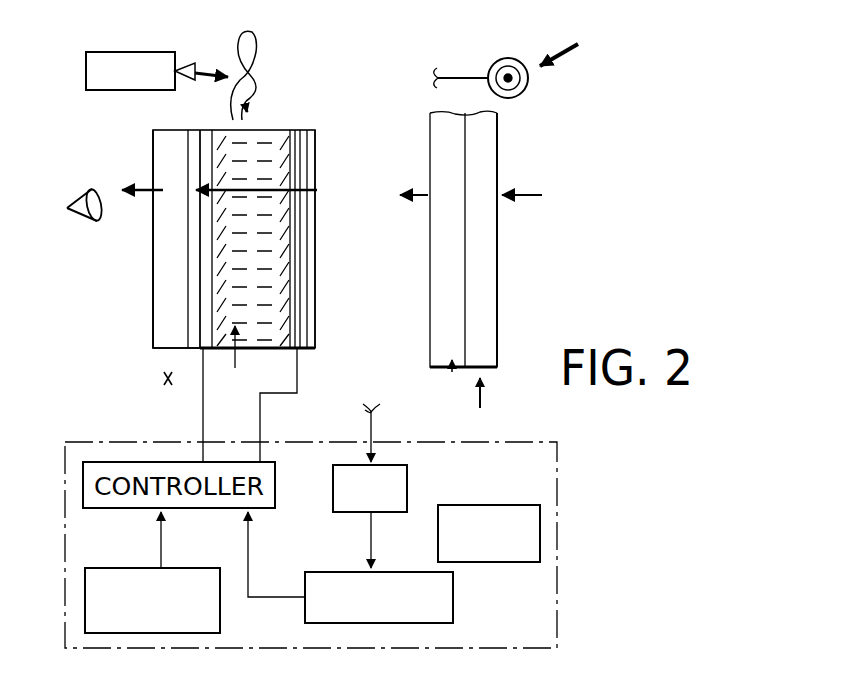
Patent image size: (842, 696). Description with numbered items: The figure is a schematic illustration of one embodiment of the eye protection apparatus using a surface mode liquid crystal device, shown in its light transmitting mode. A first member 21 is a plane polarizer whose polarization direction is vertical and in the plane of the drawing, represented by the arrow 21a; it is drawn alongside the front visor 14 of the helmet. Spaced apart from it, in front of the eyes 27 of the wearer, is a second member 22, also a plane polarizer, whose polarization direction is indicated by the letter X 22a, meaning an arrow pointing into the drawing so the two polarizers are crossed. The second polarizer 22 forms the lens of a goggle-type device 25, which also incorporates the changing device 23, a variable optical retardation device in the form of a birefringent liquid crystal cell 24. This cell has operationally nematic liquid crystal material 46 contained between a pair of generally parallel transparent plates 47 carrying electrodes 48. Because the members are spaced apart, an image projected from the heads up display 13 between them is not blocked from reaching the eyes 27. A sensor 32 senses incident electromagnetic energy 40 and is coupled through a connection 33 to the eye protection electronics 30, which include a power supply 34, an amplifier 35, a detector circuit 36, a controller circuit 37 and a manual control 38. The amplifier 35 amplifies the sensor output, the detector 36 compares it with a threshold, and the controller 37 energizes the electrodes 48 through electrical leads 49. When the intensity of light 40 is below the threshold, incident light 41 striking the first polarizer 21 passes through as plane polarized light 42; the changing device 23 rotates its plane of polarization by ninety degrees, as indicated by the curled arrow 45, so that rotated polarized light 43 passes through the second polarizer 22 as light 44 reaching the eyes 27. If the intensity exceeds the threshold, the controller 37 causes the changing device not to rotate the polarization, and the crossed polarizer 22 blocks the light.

The heads up display apparatus 13 is at (130, 52).
The front visor 14 is at (440, 351).
The first member 21 is at (485, 350).
The arrow representing polarization direction 21a is at (484, 400).
The second member 22 is at (158, 345).
The letter X 22a is at (172, 382).
The changing device 23 is at (283, 356).
The liquid crystal cell 24 is at (286, 125).
The goggle-type device 25 is at (168, 122).
The eyes 27 is at (76, 198).
The eye protection electronics 30 is at (56, 448).
The sensor 32 is at (528, 85).
The connection 33 is at (458, 78).
The power supply 34 is at (470, 505).
The amplifier 35 is at (407, 483).
The detector circuit 36 is at (330, 572).
The controller circuit 37 is at (214, 508).
The manual control 38 is at (132, 568).
The electromagnetic energy 40 is at (556, 52).
The incident light 41 is at (528, 194).
The plane polarized light 42 is at (404, 197).
The rotated polarized light 43 is at (320, 192).
The light 44 is at (148, 190).
The curled arrow 45 is at (255, 75).
The liquid crystal material 46 is at (226, 364).
The transparent plates 47 is at (166, 248).
The electrodes 48 is at (203, 331).
The electrical leads 49 is at (204, 425).